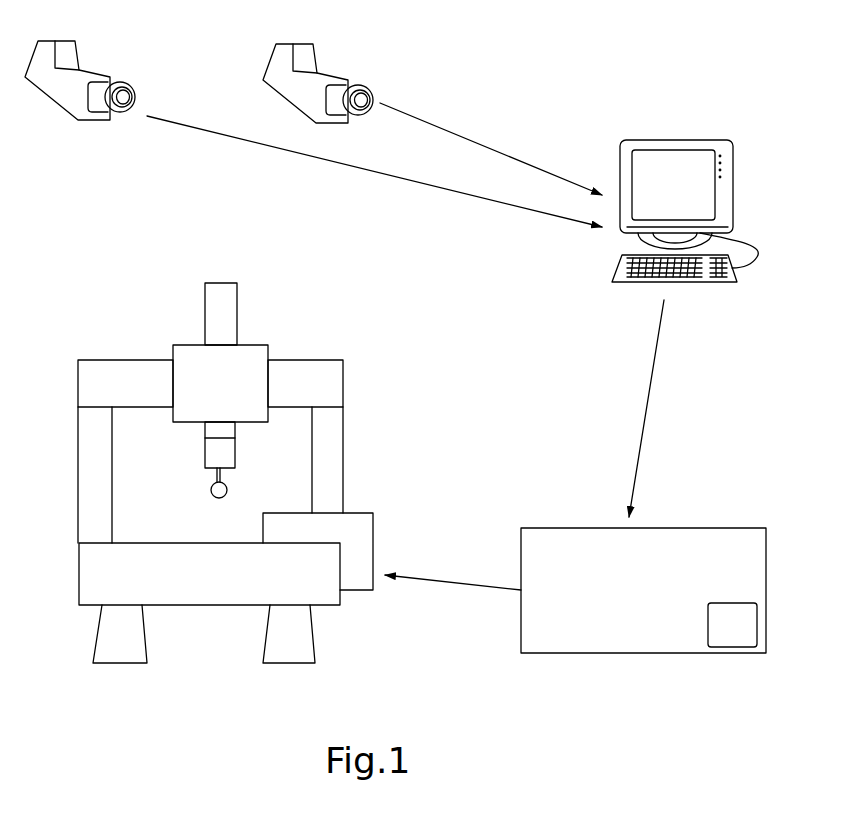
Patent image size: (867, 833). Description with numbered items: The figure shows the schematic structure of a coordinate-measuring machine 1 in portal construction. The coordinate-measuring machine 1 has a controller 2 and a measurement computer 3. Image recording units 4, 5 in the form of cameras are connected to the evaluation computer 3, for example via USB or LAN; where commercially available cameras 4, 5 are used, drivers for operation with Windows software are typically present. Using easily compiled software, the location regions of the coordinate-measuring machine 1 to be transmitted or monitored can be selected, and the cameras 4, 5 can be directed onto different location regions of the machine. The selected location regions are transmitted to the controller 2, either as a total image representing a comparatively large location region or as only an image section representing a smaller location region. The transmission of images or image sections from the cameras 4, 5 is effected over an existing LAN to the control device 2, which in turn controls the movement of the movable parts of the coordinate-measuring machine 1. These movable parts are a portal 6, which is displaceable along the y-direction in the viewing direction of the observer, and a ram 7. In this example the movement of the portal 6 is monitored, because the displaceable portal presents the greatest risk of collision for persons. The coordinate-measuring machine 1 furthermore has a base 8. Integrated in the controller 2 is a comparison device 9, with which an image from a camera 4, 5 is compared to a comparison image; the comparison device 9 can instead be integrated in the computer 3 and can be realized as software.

The coordinate-measuring machine 1 is at (211, 460).
The controller 2 is at (659, 550).
The measurement computer 3 is at (711, 138).
The image recording unit 4 is at (335, 71).
The image recording unit 5 is at (98, 72).
The portal 6 is at (335, 360).
The ram 7 is at (205, 307).
The base 8 is at (79, 571).
The comparison device 9 is at (745, 628).